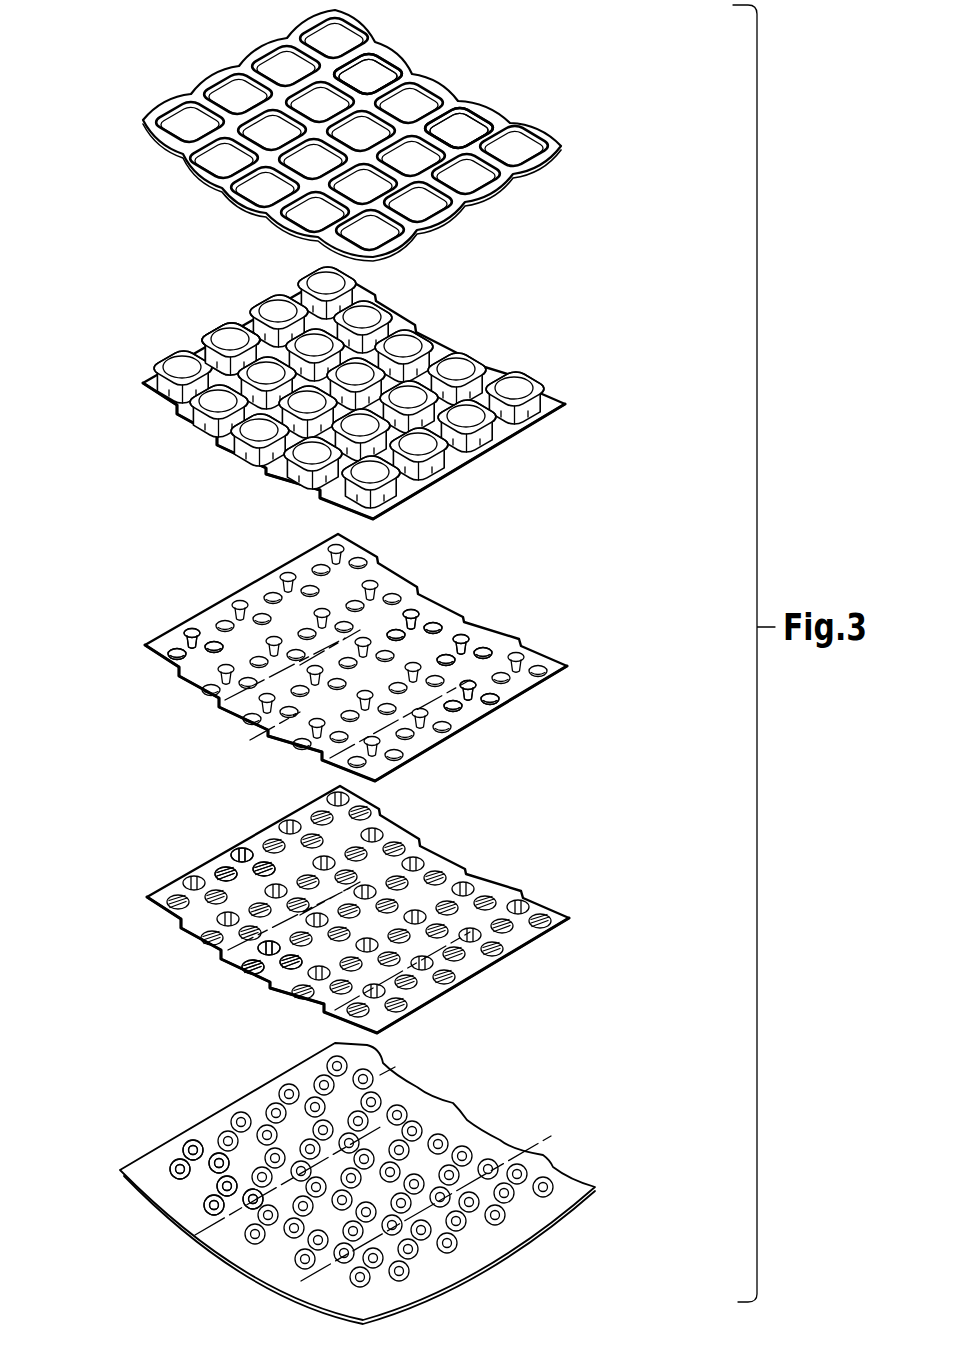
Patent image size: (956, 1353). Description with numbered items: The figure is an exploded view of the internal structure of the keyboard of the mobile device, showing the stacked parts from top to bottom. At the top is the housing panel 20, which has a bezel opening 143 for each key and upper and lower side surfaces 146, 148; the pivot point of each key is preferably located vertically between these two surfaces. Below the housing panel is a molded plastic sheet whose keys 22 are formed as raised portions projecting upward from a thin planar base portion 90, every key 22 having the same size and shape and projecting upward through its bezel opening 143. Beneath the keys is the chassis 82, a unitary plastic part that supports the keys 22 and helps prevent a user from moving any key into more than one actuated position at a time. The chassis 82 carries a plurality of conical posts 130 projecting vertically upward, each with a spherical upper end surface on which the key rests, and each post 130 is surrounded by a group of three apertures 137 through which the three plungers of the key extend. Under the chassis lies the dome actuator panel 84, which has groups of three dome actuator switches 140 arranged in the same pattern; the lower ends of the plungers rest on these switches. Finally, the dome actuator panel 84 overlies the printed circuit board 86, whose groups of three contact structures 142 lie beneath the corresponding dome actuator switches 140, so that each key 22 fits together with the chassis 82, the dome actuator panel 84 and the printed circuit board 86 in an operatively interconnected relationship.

The housing panel 20 is at (361, 134).
The bezel opening 143 is at (392, 57).
The upper side surface 146 is at (507, 113).
The lower side surface 148 is at (522, 172).
The key 22 is at (230, 322).
The base portion 90 is at (387, 393).
The chassis 82 is at (342, 657).
The post 130 is at (466, 648).
The aperture 137 is at (470, 716).
The dome actuator panel 84 is at (336, 909).
The dome actuator switch 140 is at (243, 975).
The printed circuit board 86 is at (334, 1183).
The contact structure 142 is at (212, 1206).